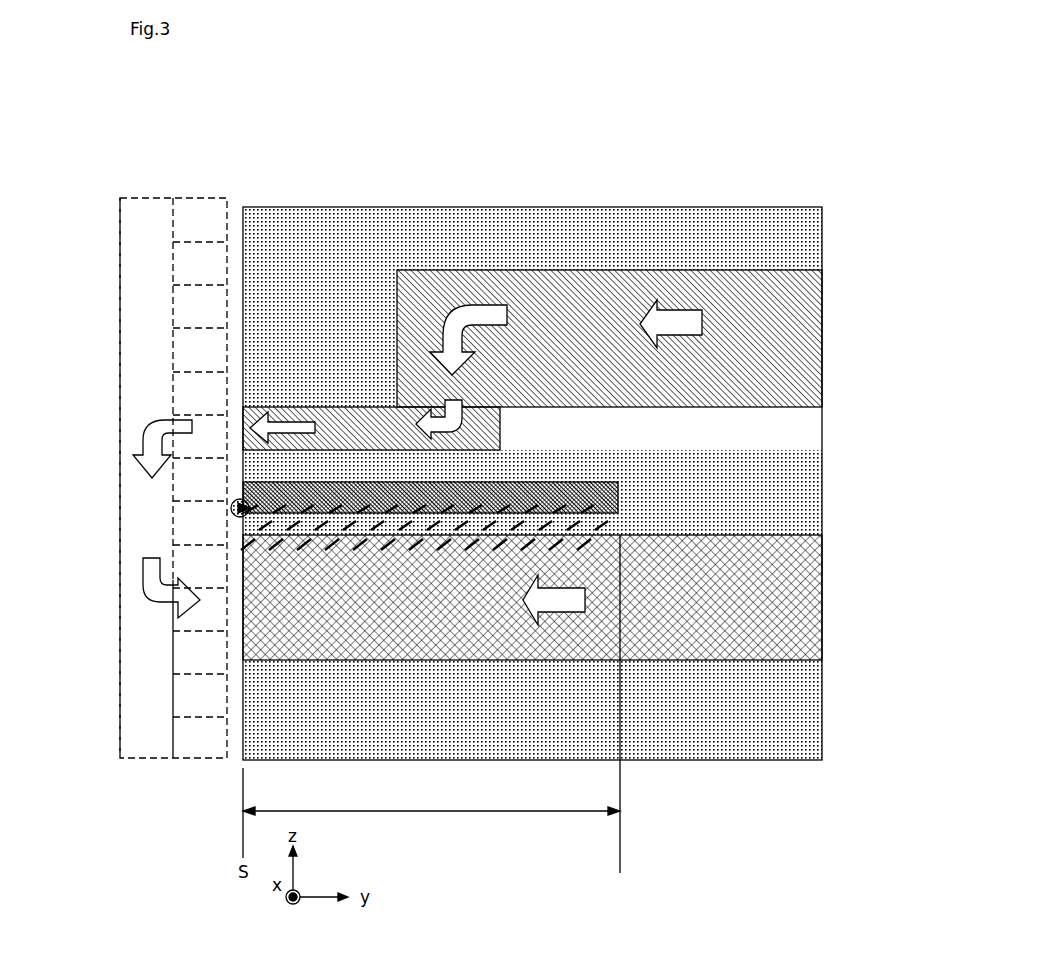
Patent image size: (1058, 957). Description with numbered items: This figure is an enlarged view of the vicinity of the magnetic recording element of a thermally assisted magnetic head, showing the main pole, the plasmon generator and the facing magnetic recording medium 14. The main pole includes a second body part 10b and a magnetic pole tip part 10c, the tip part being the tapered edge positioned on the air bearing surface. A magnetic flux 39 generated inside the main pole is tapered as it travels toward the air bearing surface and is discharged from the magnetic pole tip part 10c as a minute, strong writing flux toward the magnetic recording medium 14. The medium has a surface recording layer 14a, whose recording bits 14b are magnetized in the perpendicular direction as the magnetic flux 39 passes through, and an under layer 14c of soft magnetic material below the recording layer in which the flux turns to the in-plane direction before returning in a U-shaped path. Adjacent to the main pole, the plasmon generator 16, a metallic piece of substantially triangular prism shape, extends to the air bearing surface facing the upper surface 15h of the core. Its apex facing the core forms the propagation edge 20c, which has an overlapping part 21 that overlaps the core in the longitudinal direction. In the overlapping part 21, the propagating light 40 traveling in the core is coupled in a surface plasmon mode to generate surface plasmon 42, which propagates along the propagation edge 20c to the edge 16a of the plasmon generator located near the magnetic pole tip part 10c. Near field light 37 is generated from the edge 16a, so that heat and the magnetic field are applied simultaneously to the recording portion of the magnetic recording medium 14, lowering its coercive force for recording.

The magnetic recording medium 14 is at (180, 188).
The recording layer 14a is at (197, 762).
The recording bits 14b is at (205, 212).
The under layer 14c is at (148, 762).
The second body part 10b is at (515, 270).
The magnetic pole tip part 10c is at (300, 408).
The magnetic flux 39 is at (465, 305).
The plasmon generator 16 is at (600, 512).
The upper surface of the core 15h is at (685, 535).
The propagation edge 20c is at (640, 575).
The near field light 37 is at (233, 500).
The edge of the plasmon generator 16a is at (240, 508).
The surface plasmon 42 is at (418, 548).
The propagating light 40 is at (565, 612).
The overlapping part 21 is at (452, 812).